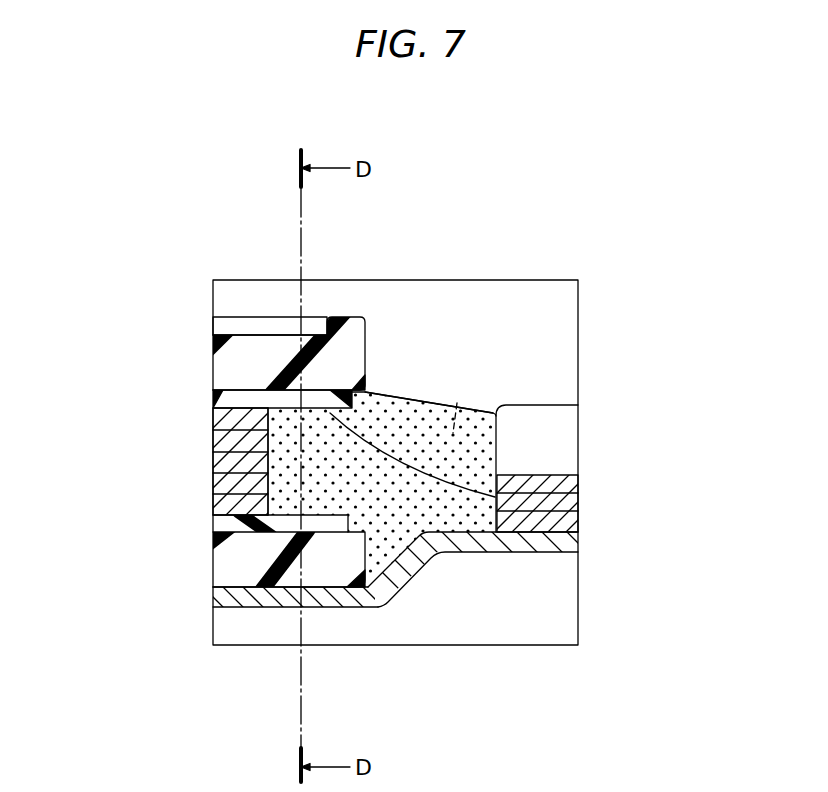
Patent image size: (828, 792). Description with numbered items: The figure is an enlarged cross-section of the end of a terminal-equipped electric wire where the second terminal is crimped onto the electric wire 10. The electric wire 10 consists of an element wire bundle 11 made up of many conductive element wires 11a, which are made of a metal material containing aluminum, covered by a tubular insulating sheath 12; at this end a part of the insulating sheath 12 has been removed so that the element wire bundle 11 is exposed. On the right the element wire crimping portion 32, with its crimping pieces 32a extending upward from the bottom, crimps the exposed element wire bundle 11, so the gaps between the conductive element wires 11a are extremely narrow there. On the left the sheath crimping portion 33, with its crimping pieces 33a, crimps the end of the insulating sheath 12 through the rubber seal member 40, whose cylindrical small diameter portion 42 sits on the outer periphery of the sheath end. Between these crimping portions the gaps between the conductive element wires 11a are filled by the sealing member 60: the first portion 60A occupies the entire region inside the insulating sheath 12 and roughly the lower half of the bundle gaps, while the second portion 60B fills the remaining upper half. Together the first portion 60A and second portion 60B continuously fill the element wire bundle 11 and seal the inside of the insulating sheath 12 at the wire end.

The electric wire 10 is at (212, 556).
The insulating sheath 12 is at (248, 541).
The element wire bundle 11 is at (228, 458).
The conductive element wires 11a is at (457, 403).
The element wire crimping portion 32 is at (540, 552).
The crimping pieces 32a is at (542, 418).
The sheath crimping portion 33 is at (259, 608).
The crimping pieces 33a is at (253, 330).
The seal member 40 is at (211, 360).
The small diameter portion 42 is at (206, 358).
The sealing member 60 is at (497, 192).
The first portion 60A is at (358, 476).
The second portion 60B is at (428, 388).